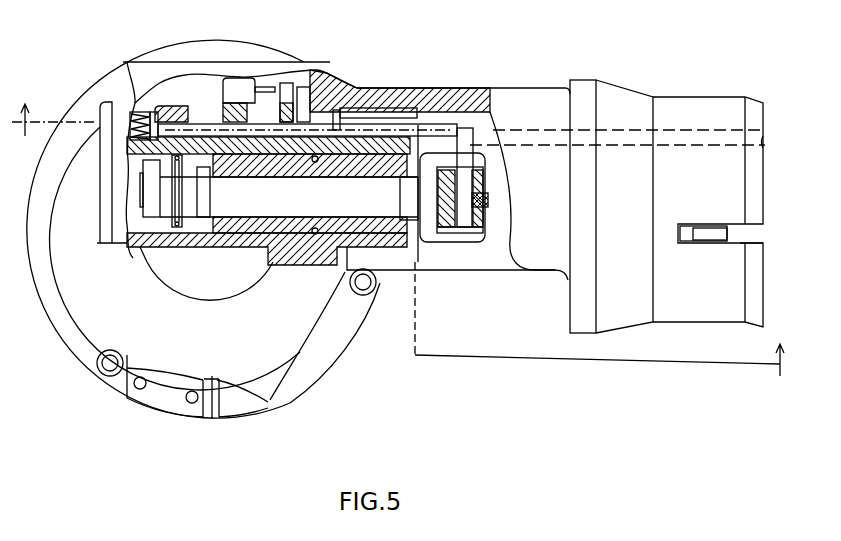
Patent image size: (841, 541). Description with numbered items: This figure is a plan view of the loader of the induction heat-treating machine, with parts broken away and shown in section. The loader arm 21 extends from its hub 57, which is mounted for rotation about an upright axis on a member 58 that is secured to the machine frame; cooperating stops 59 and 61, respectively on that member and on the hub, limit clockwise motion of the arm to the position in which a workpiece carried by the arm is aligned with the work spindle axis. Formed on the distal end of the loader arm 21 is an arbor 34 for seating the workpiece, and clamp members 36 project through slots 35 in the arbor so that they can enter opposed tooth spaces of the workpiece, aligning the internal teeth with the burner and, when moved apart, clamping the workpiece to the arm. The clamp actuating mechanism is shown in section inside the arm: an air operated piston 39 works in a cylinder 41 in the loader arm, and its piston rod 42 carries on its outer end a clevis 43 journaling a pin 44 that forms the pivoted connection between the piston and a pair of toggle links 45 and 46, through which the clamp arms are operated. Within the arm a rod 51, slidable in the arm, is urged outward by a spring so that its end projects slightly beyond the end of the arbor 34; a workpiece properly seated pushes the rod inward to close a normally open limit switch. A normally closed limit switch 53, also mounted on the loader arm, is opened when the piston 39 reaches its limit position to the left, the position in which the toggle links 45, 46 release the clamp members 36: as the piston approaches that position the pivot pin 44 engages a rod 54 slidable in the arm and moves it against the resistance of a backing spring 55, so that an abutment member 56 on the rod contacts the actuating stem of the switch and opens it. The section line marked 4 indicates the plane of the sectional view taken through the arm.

The section line 4- 4 is at (399, 229).
The loader arm 21 is at (385, 87).
The arbor 34 is at (690, 288).
The slots 35 is at (750, 231).
The clamp members 36 is at (705, 230).
The piston 39 is at (175, 240).
The cylinder 41 is at (133, 245).
The piston rod 42 is at (327, 233).
The clevis 43 is at (443, 235).
The pin 44 is at (467, 147).
The toggle link 45 is at (478, 218).
The toggle link 46 is at (437, 196).
The rod 51 is at (765, 146).
The limit switch 53 is at (243, 85).
The rod 54 is at (413, 128).
The backing spring 55 is at (127, 63).
The abutment member 56 is at (293, 92).
The hub 57 is at (195, 343).
The member 58 is at (90, 345).
The stop 59 is at (162, 400).
The stop 61 is at (210, 402).